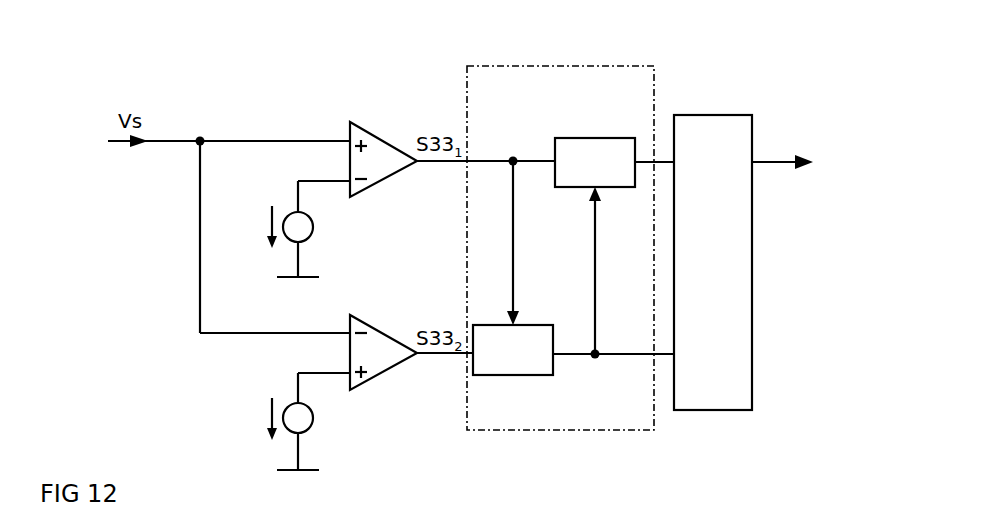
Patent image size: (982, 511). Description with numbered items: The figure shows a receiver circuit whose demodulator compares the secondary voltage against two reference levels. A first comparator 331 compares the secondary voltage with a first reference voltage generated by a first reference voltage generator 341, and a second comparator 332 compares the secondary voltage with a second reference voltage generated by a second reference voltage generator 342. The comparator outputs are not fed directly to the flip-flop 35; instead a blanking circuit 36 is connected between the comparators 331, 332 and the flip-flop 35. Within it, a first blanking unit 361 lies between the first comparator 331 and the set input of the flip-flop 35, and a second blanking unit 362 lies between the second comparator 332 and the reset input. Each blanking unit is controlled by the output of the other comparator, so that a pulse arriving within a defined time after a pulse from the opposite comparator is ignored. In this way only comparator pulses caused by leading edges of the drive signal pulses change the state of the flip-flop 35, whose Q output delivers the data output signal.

The first comparator 331 is at (380, 134).
The second comparator 332 is at (380, 330).
The first reference voltage generator 341 is at (313, 226).
The second reference voltage generator 342 is at (313, 418).
The blanking circuit 36 is at (570, 219).
The first blanking unit 361 is at (597, 138).
The second blanking unit 362 is at (535, 325).
The flip-flop 35 is at (712, 115).